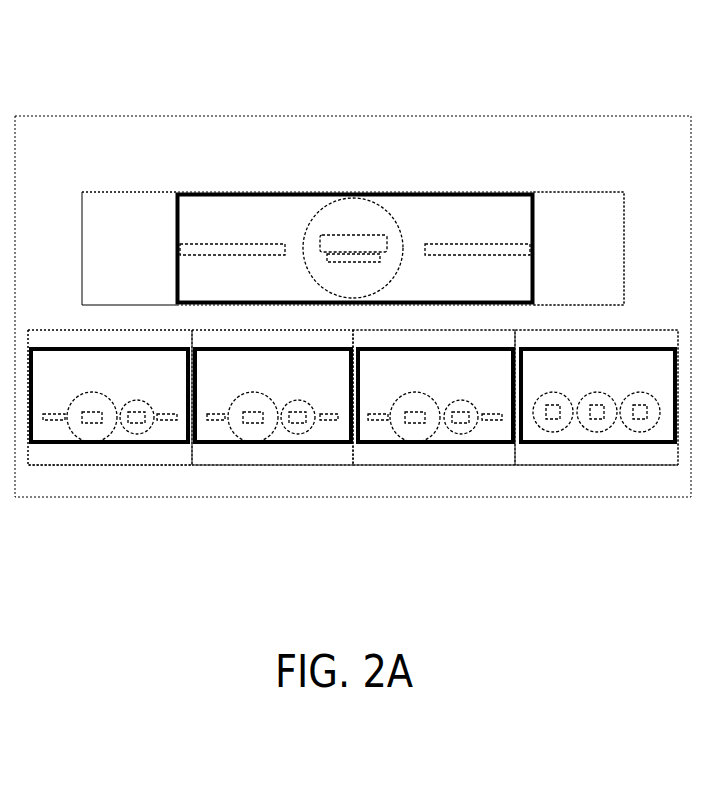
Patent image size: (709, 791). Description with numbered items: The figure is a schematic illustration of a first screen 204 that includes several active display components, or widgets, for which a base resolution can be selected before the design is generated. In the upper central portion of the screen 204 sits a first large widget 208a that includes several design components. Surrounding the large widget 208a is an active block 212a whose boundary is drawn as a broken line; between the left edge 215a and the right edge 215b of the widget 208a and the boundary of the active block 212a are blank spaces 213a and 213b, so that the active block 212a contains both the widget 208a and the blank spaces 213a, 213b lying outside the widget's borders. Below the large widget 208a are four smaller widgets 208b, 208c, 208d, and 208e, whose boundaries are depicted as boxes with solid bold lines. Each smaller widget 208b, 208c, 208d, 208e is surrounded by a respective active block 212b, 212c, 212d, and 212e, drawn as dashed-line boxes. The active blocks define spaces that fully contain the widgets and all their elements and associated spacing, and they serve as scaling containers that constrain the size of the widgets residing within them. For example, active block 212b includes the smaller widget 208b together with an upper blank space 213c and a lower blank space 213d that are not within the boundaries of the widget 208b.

The first screen 204 is at (60, 116).
The active block 212a is at (133, 192).
The active block 212b is at (122, 467).
The active block 212c is at (283, 467).
The active block 212d is at (445, 467).
The active block 212e is at (608, 467).
The blank space 213a is at (104, 208).
The blank space 213b is at (603, 207).
The upper blank space 213c is at (46, 338).
The lower blank space 213d is at (48, 455).
The first large widget 208a is at (278, 232).
The smaller widget 208b is at (133, 387).
The smaller widget 208c is at (303, 387).
The smaller widget 208d is at (474, 387).
The smaller widget 208e is at (631, 385).
The left edge 215a is at (173, 274).
The right edge 215b is at (535, 226).